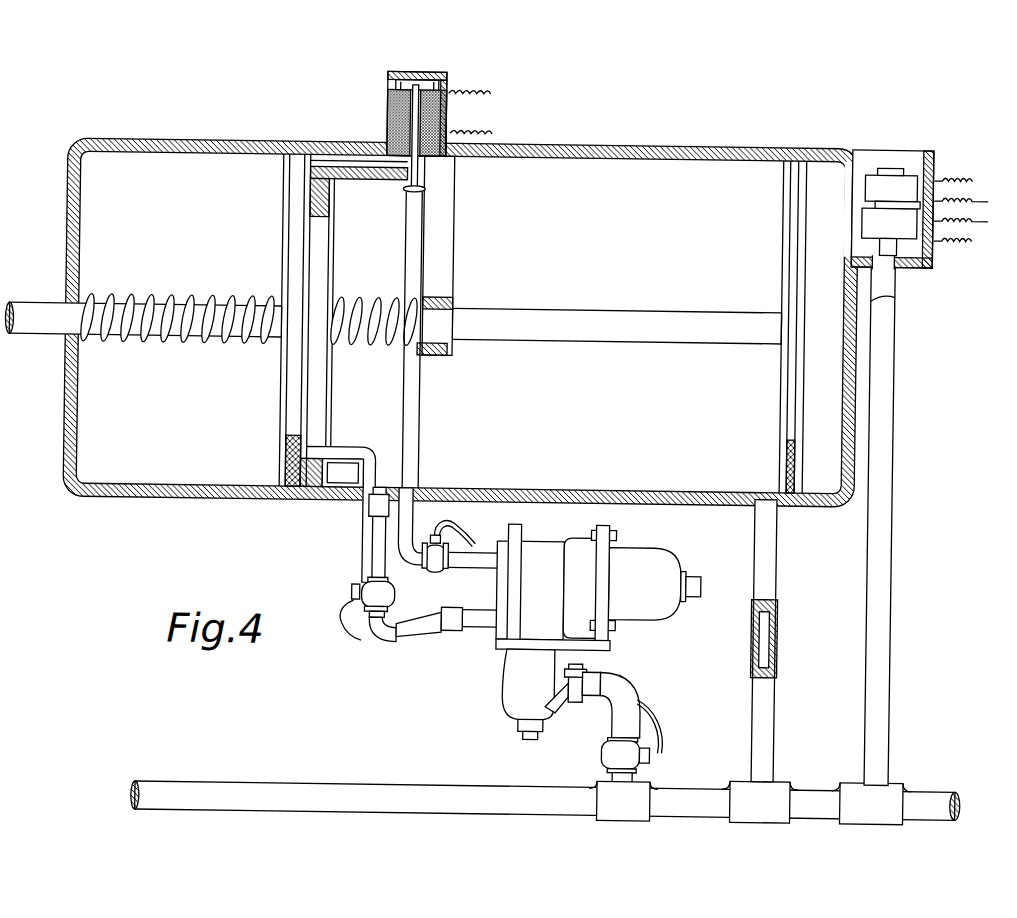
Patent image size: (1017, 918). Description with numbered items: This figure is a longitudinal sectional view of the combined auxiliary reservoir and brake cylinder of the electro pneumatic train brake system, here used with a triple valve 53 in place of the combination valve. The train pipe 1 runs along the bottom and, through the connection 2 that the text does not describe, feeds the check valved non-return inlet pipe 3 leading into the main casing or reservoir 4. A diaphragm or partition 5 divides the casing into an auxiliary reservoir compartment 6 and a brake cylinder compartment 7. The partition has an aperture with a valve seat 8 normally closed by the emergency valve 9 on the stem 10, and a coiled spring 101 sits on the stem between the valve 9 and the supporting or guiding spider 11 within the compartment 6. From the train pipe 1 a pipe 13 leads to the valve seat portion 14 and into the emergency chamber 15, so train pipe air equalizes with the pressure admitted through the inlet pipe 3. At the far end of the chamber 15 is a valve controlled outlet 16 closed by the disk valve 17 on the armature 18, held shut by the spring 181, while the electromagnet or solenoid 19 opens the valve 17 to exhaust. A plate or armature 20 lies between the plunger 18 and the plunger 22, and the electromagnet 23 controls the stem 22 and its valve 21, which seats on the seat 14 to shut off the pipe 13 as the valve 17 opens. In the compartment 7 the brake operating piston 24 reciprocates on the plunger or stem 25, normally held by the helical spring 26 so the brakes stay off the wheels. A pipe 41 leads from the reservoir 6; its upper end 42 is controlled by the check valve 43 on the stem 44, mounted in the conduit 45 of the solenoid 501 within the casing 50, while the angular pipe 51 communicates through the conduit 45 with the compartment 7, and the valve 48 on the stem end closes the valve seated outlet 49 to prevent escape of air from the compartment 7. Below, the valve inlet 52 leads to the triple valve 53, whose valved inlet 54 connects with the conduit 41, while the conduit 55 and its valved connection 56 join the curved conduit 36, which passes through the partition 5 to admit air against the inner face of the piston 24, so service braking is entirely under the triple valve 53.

The train pipe 1 is at (390, 783).
The tee coupling 2 is at (772, 786).
The check valved non-return inlet pipe 3 is at (766, 567).
The main casing or reservoir 4 is at (750, 497).
The diaphragm or partition 5 is at (335, 495).
The auxiliary reservoir compartment 6 is at (637, 412).
The brake cylinder compartment 7 is at (180, 412).
The valve seat 8 is at (322, 200).
The emergency valve 9 is at (328, 253).
The stem 10 is at (511, 313).
The coiled spring 101 is at (369, 297).
The supporting or guiding spider 11 is at (455, 298).
The conduit or pipe 13 is at (880, 658).
The valve seat portion 14 is at (898, 286).
The emergency chamber 15 is at (918, 207).
The valve controlled outlet 16 is at (858, 150).
The disk valve 17 is at (889, 150).
The armature 18 is at (905, 163).
The spring 181 is at (897, 163).
The electromagnet or solenoid 19 is at (907, 176).
The plate or armature 20 is at (975, 194).
The valve 21 is at (900, 242).
The plunger 22 is at (912, 214).
The electromagnet 23 is at (975, 226).
The brake operating piston 24 is at (284, 218).
The brake operating plunger or stem 25 is at (214, 300).
The coiled or helical spring 26 is at (160, 300).
The curved conduit 36 is at (340, 445).
The pipe or conduit 41 is at (423, 240).
The upper end 42 is at (427, 186).
The check valve 43 is at (420, 180).
The stem 44 is at (446, 103).
The conduit 45 is at (447, 142).
The valve 48 is at (415, 105).
The valve seated outlet 49 is at (392, 70).
The casing 50 is at (392, 96).
The electromagnet or solenoid 501 is at (412, 100).
The angular pipe or conduit 51 is at (340, 150).
The valve inlet 52 is at (630, 752).
The triple valve 53 is at (565, 640).
The valved inlet 54 is at (450, 550).
The conduit 55 is at (445, 630).
The valved connection 56 is at (378, 585).